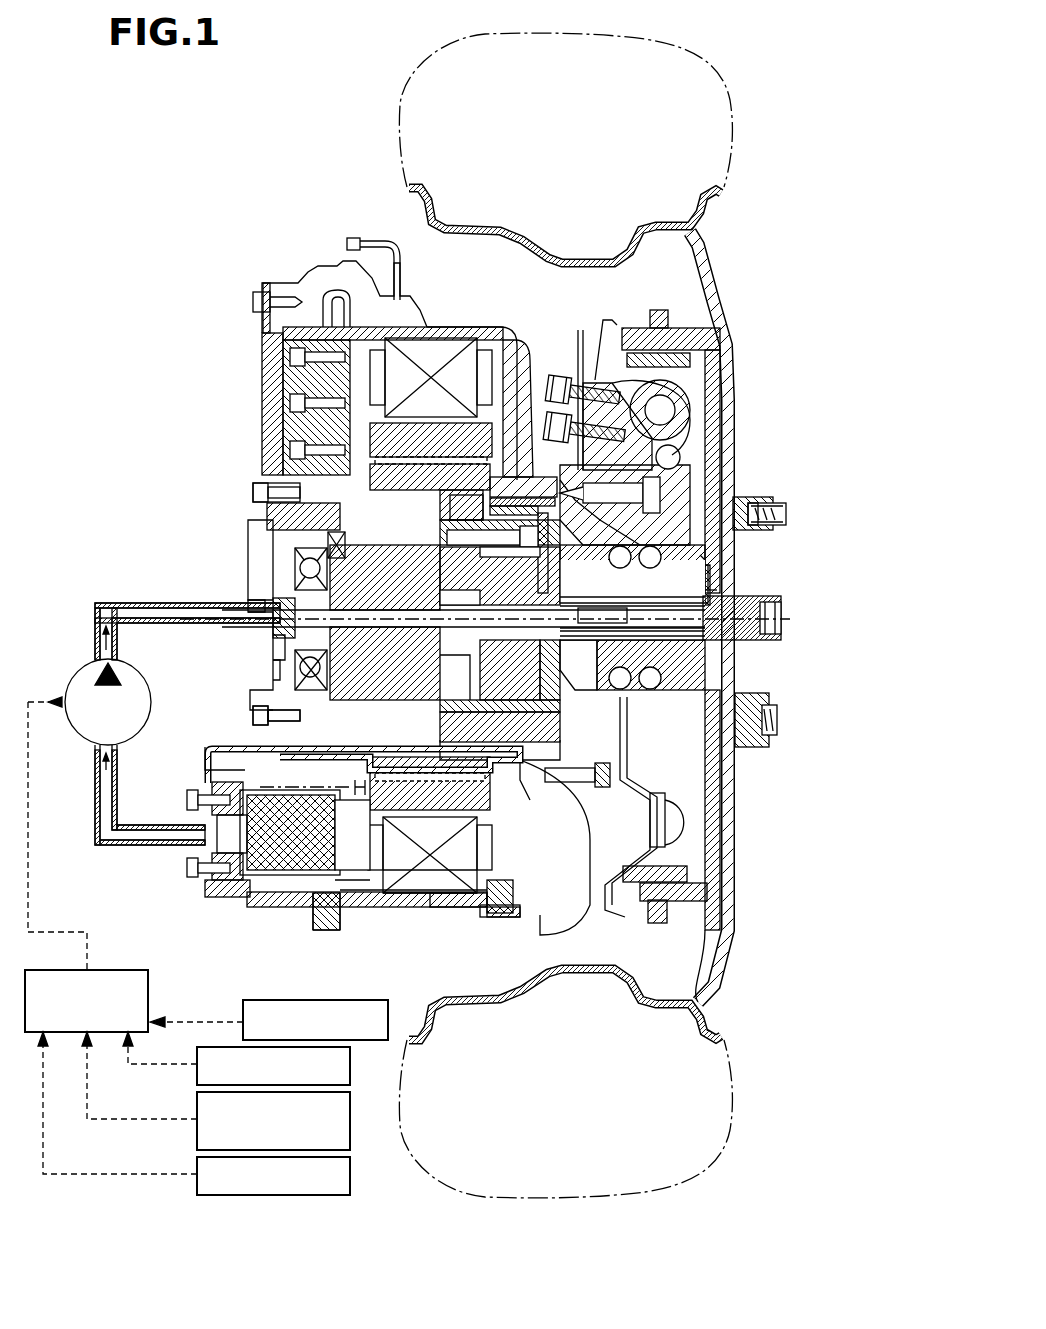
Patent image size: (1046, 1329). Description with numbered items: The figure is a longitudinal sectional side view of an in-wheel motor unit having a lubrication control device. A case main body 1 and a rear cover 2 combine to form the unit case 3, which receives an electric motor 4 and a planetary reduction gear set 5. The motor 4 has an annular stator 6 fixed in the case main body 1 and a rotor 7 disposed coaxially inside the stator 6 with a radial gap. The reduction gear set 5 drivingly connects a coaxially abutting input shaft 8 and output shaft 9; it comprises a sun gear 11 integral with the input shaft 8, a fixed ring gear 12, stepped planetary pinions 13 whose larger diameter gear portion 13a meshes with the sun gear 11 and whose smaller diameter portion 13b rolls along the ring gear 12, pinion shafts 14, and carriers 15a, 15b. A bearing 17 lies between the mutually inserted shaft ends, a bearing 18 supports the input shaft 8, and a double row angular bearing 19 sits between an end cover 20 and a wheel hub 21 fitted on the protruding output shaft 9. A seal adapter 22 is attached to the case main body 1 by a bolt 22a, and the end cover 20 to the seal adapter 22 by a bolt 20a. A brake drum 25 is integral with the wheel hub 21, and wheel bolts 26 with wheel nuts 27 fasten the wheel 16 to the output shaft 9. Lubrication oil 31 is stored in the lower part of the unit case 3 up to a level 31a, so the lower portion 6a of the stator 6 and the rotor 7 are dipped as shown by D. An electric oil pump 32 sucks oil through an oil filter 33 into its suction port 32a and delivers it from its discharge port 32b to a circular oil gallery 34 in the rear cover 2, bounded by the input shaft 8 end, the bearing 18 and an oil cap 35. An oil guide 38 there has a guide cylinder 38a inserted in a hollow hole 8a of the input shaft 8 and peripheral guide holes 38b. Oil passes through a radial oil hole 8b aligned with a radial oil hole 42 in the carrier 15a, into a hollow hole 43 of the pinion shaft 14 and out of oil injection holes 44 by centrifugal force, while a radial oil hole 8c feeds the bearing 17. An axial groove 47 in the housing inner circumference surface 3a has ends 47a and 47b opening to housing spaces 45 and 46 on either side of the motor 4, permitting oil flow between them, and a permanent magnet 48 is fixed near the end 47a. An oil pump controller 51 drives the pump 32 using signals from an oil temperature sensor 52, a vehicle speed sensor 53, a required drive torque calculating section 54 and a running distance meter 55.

The case main body 1 is at (346, 925).
The rear cover 2 is at (323, 925).
The unit case 3 is at (345, 967).
The housing inner circumference surface 3a is at (420, 880).
The electric motor 4 is at (455, 340).
The reduction gear set 5 is at (460, 490).
The annular stator 6 is at (418, 340).
The lower portion of the stator 6a is at (445, 880).
The rotor 7 is at (437, 435).
The input shaft 8 is at (280, 530).
The hollow hole 8a is at (262, 606).
The radial oil hole 8b is at (455, 650).
The radial oil hole 8c is at (525, 498).
The output shaft 9 is at (690, 648).
The sun gear 11 is at (445, 640).
The fixed ring gear 12 is at (543, 513).
The stepped planetary pinion 13 is at (793, 556).
The larger diameter gear portion 13a is at (710, 580).
The smaller diameter gear portion 13b is at (700, 555).
The pinion shaft 14 is at (430, 515).
The carrier 15a is at (262, 496).
The carrier 15b is at (578, 375).
The wheel 16 is at (728, 262).
The bearing 17 is at (540, 645).
The bearing 18 is at (300, 568).
The bearing 19 is at (622, 690).
The end cover 20 is at (660, 495).
The bolt 20a is at (690, 470).
The wheel hub 21 is at (712, 530).
The seal adapter 22 is at (692, 410).
The bolt 22a is at (597, 790).
The brake drum 25 is at (712, 385).
The wheel bolts 26 is at (770, 517).
The wheel nuts 27 is at (690, 350).
The lubrication oil 31 is at (285, 885).
The oil level 31a is at (305, 787).
The electric oil pump 32 is at (72, 675).
The suction port 32a is at (130, 840).
The discharge port 32b is at (130, 610).
The oil filter 33 is at (265, 868).
The oil gallery 34 is at (275, 605).
The oil cap 35 is at (255, 714).
The oil guide 38 is at (268, 668).
The guide cylinder 38a is at (275, 635).
The guide holes 38b is at (275, 660).
The radial oil hole 42 is at (298, 555).
The hollow hole 43 is at (455, 493).
The oil injection holes 44 is at (405, 512).
The housing space 45 is at (582, 850).
The housing space 46 is at (238, 760).
The axial groove 47 is at (392, 900).
The end of axial groove 47a is at (482, 905).
The end of axial groove 47b is at (345, 890).
The permanent magnet 48 is at (513, 900).
The oil pump controller 51 is at (123, 970).
The oil temperature sensor 52 is at (312, 1000).
The vehicle speed sensor 53 is at (350, 1066).
The required drive torque calculating section 54 is at (350, 1130).
The running distance meter 55 is at (350, 1178).
The rotor dipping depth D is at (358, 790).